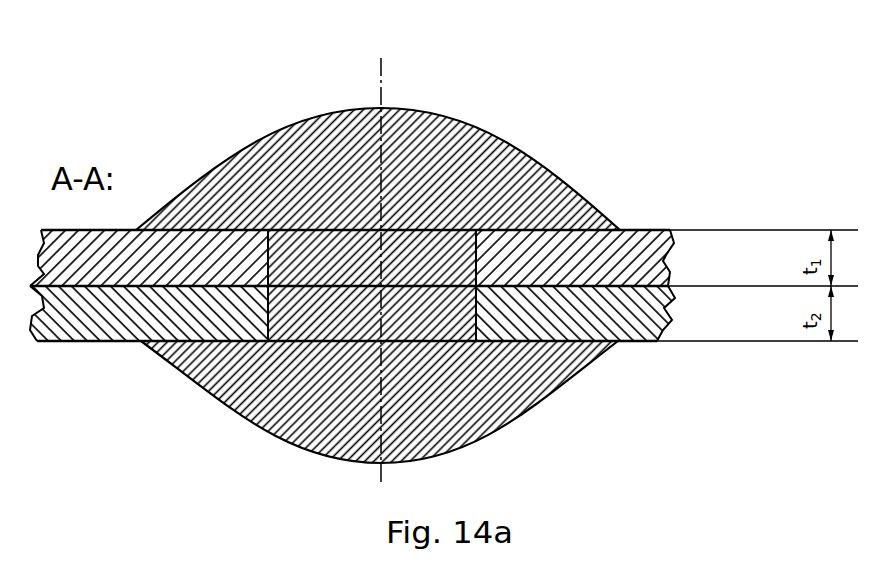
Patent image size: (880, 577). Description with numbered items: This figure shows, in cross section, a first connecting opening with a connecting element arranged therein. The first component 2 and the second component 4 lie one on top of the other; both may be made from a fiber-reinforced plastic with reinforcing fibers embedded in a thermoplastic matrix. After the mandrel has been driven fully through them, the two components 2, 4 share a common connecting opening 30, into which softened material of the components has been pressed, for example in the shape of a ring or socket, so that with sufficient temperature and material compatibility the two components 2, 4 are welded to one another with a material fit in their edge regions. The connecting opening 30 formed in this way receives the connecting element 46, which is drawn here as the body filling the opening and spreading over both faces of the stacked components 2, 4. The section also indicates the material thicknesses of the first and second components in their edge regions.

The first component 2 is at (635, 230).
The second component 4 is at (628, 330).
The connecting opening 30 is at (472, 240).
The connecting element 46 is at (420, 185).